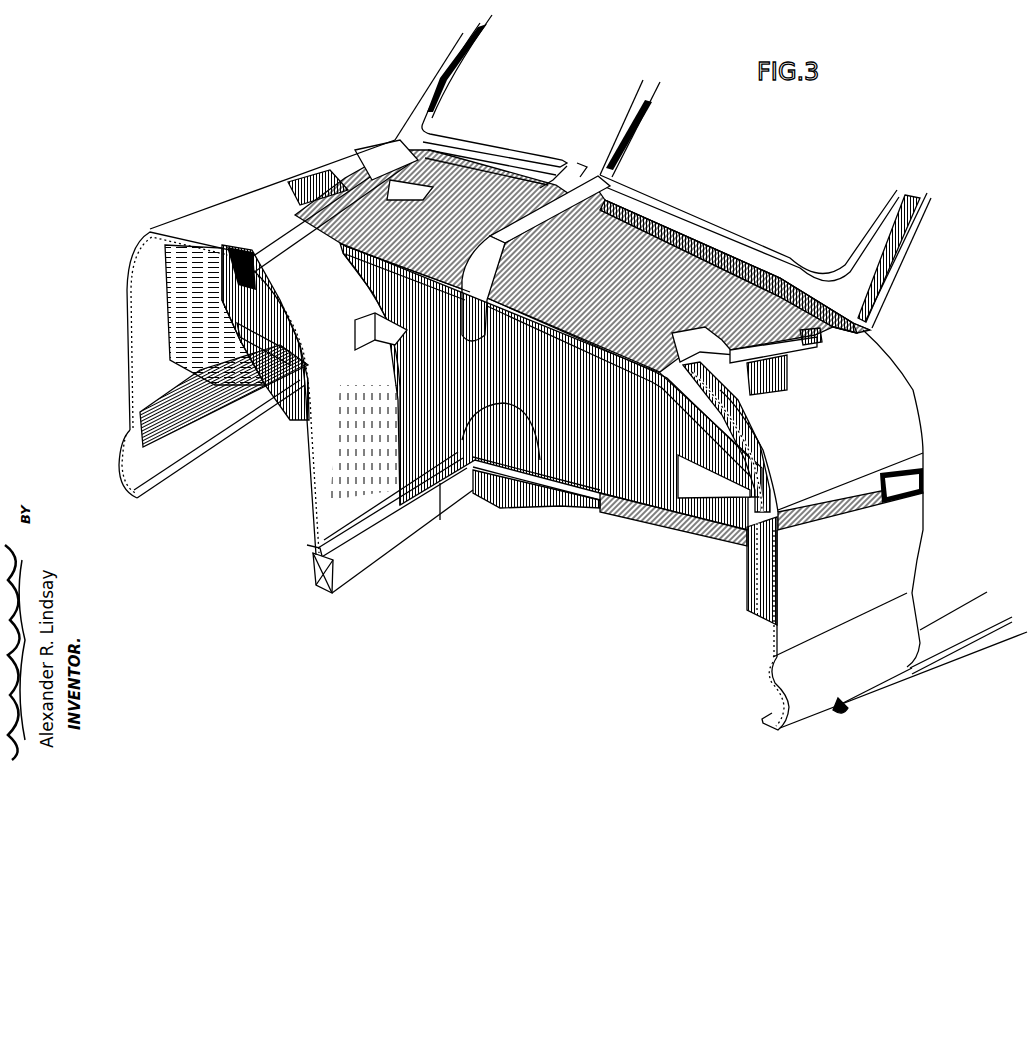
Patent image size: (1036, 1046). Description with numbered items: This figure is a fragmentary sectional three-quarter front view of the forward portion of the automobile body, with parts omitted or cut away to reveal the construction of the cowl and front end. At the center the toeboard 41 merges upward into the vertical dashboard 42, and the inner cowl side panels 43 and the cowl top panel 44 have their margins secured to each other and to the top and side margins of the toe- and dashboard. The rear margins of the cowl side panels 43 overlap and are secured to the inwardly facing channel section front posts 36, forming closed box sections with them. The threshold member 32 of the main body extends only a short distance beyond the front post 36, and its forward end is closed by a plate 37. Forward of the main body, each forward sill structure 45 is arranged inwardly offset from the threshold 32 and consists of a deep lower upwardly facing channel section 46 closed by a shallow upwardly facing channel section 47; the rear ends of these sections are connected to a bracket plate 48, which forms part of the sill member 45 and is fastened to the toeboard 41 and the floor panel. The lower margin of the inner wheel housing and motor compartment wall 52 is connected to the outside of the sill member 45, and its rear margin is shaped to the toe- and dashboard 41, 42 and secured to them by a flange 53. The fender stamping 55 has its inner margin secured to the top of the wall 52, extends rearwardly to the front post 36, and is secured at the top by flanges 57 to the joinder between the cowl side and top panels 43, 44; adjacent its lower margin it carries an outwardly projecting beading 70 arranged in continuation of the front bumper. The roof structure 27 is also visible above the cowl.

The roof panel 27 is at (729, 184).
The cowl top panel 44 is at (735, 263).
The toeboard 41 is at (632, 525).
The dashboard 42 is at (508, 340).
The bracket plate 48 is at (502, 500).
The forward sill structure 45 is at (352, 580).
The deep lower upwardly facing channel section 46 is at (318, 582).
The shallow upwardly facing channel section 47 is at (313, 550).
The inner wheel housing and motor compartment wall 52 is at (311, 519).
The flange 53 is at (372, 352).
The fender stamping 55 is at (143, 378).
The beading 70 is at (127, 481).
The inner cowl side panel 43 is at (772, 530).
The front post 36 is at (910, 480).
The flange 57 is at (795, 348).
The threshold member 32 is at (993, 632).
The plate 37 is at (836, 710).